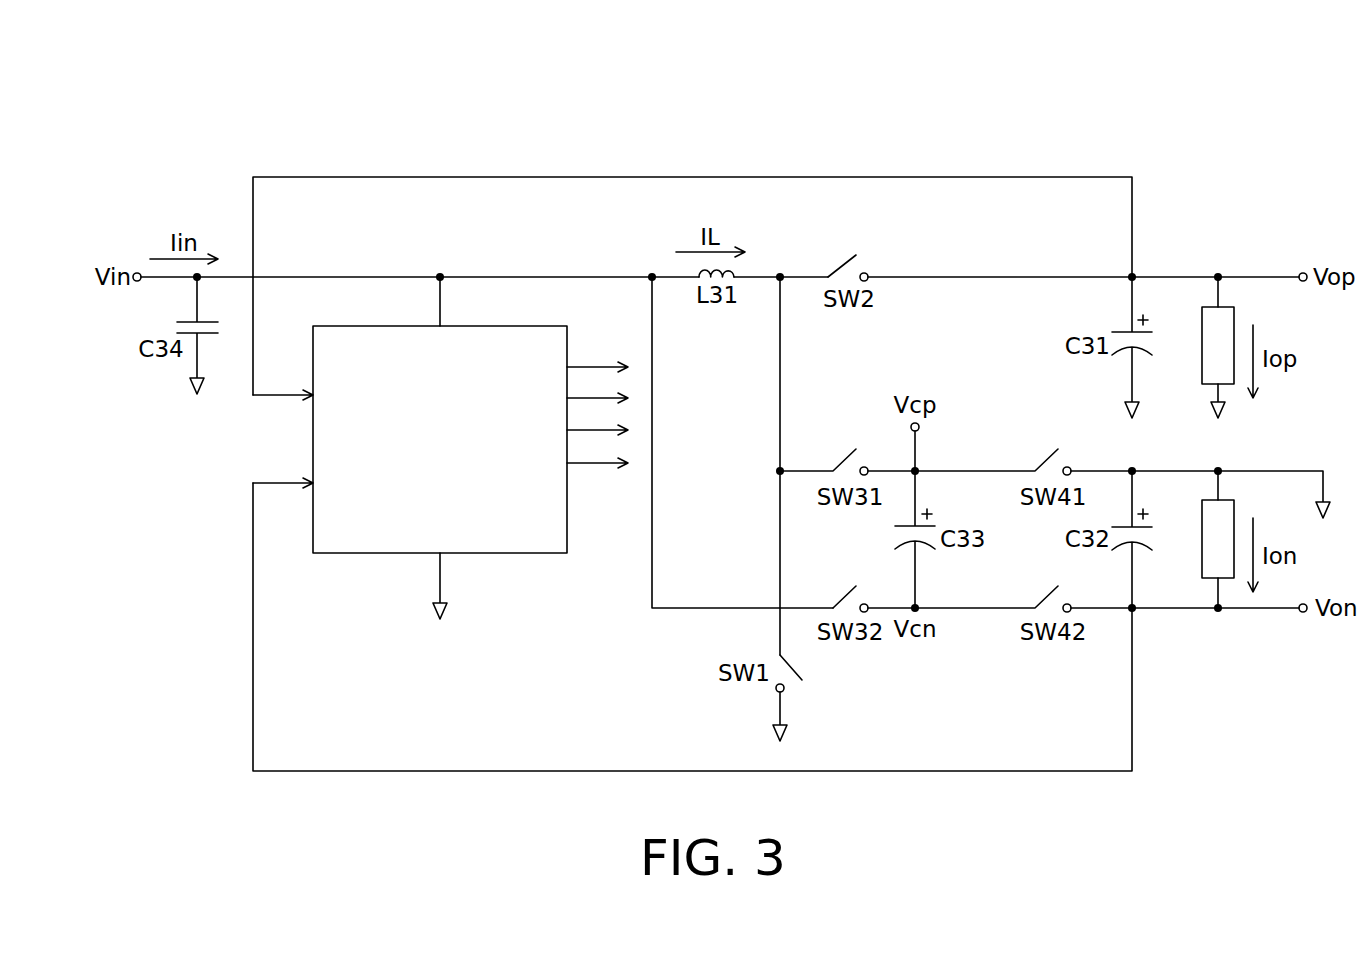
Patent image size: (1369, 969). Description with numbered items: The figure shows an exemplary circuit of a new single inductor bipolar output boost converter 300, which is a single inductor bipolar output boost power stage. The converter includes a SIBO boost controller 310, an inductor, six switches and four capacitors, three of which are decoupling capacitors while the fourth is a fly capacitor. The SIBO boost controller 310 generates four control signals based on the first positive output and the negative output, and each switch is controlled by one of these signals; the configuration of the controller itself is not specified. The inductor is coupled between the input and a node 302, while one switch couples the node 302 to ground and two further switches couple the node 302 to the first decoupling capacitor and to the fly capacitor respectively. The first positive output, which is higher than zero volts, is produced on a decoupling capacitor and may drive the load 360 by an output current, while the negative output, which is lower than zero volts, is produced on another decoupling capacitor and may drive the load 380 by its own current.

The SIBO boost converter 300 is at (1366, 78).
The node 302 is at (780, 273).
The SIBO boost controller 310 is at (520, 553).
The load 360 is at (1228, 305).
The load 380 is at (1228, 498).